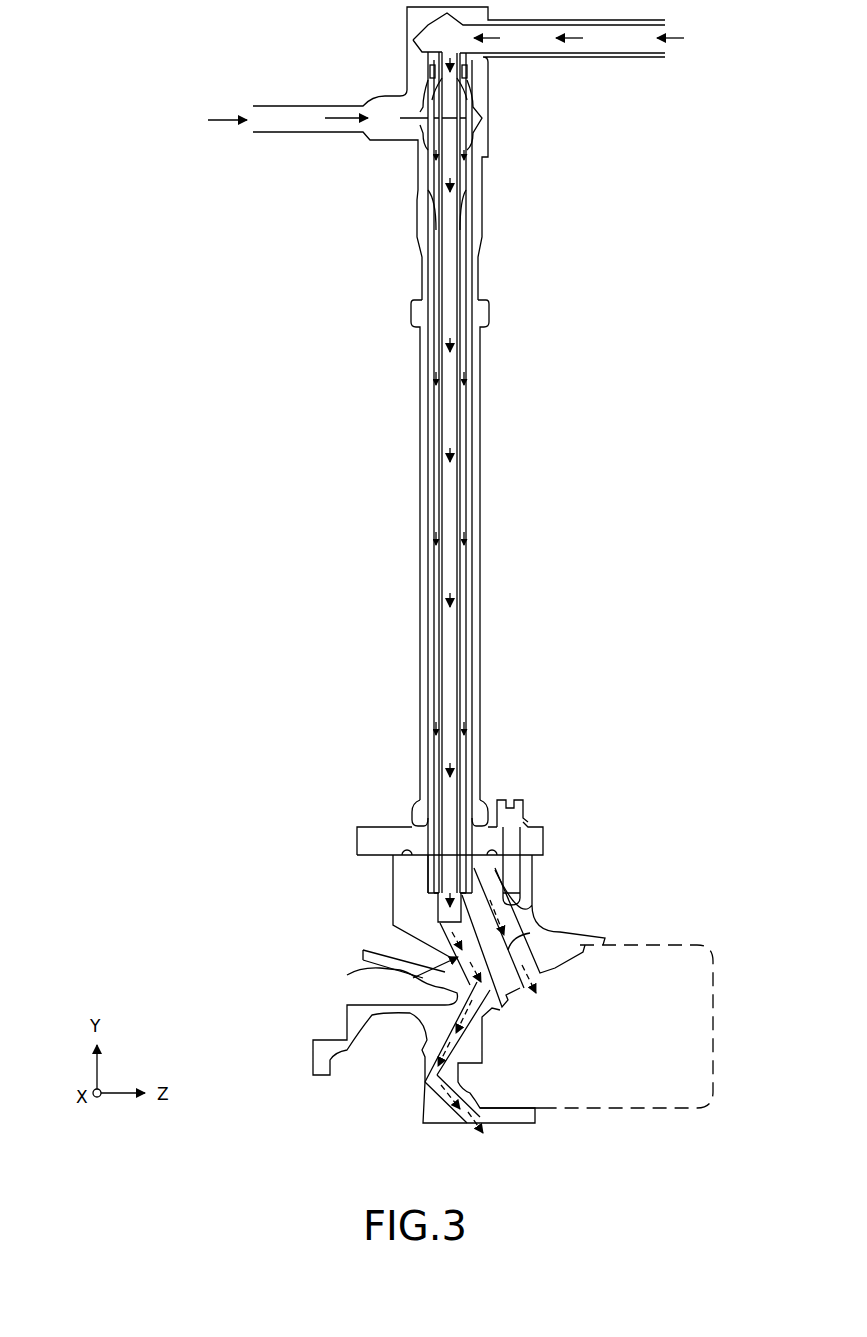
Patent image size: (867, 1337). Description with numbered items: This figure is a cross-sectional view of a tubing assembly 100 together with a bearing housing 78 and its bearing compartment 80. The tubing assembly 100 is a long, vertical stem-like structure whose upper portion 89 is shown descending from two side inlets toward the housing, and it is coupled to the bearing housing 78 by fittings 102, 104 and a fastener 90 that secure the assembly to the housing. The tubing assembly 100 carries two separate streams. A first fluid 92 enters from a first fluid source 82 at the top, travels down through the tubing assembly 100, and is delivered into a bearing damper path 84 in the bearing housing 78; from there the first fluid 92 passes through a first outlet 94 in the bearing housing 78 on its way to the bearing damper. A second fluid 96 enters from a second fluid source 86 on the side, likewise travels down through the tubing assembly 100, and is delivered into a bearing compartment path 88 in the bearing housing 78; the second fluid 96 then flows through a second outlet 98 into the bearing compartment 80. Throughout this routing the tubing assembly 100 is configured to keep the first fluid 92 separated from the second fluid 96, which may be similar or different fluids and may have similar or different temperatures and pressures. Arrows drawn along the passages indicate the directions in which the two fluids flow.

The tubing assembly 100 is at (127, 66).
The first fluid source 82 is at (595, 41).
The first fluid 92 is at (570, 42).
The second fluid source 86 is at (300, 195).
The second fluid 96 is at (342, 121).
The feed arm stem 89 is at (412, 835).
The fitting 102 is at (395, 833).
The fastener 90 is at (525, 812).
The bearing compartment path 88 is at (555, 935).
The fitting 104 is at (437, 895).
The bearing damper path 84 is at (424, 1036).
The second outlet 98 is at (499, 1032).
The bearing housing 78 is at (560, 948).
The bearing compartment 80 is at (608, 1088).
The first outlet 94 is at (470, 1119).